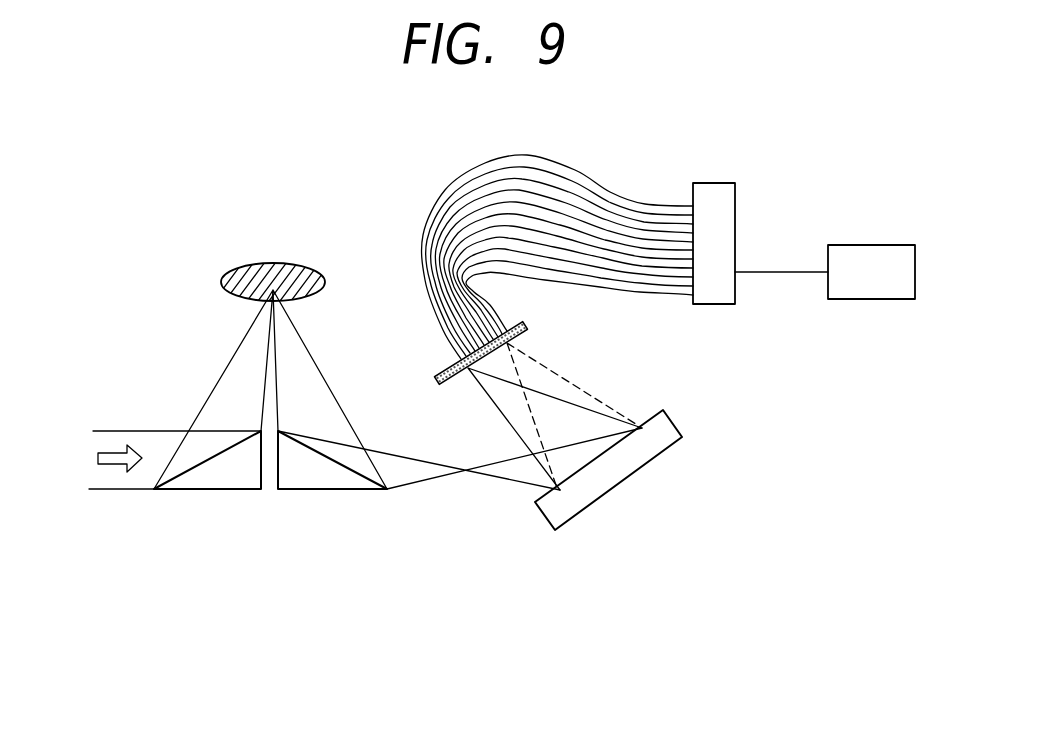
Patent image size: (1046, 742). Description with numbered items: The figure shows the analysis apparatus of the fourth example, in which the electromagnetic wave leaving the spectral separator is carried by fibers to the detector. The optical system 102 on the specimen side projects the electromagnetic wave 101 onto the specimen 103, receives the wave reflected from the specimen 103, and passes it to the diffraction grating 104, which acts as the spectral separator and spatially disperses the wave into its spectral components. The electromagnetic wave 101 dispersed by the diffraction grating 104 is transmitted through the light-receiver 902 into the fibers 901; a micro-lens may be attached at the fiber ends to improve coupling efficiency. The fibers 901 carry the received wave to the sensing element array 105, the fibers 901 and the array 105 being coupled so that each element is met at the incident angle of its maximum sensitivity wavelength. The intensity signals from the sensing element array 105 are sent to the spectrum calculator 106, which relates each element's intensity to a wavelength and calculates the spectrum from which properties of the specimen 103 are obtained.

The electromagnetic wave 101 is at (133, 431).
The optical system on the specimen side 102 is at (228, 492).
The specimen 103 is at (255, 265).
The diffraction grating 104 is at (633, 473).
The sensing element array 105 is at (723, 307).
The spectrum calculator 106 is at (875, 245).
The fibers 901 is at (605, 188).
The light-receiver 902 is at (527, 325).